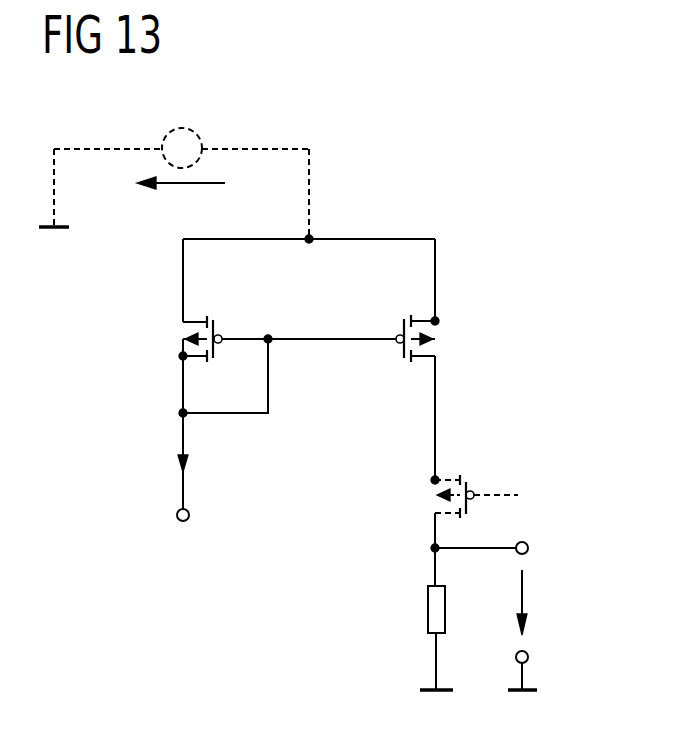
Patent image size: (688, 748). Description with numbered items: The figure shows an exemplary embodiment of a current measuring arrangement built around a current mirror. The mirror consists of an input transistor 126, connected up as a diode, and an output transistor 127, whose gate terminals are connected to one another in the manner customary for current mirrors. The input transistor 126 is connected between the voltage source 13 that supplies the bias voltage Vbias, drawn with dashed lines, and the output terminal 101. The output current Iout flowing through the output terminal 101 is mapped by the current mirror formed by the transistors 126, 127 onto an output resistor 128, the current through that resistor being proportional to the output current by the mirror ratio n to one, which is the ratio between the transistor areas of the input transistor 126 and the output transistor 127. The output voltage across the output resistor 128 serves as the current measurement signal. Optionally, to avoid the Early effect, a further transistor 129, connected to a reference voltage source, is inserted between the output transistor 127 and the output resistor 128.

The voltage source 13 is at (182, 128).
The input transistor 126 is at (216, 326).
The output transistor 127 is at (402, 326).
The further transistor 129 is at (469, 486).
The output resistor 128 is at (428, 611).
The output terminal 101 is at (190, 513).